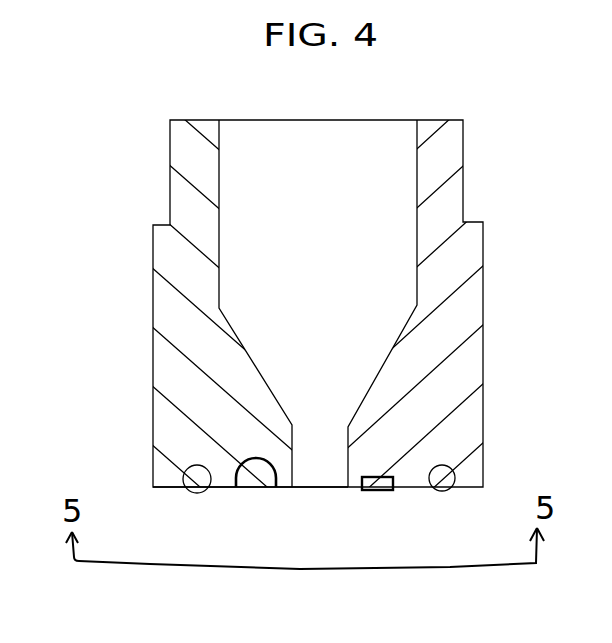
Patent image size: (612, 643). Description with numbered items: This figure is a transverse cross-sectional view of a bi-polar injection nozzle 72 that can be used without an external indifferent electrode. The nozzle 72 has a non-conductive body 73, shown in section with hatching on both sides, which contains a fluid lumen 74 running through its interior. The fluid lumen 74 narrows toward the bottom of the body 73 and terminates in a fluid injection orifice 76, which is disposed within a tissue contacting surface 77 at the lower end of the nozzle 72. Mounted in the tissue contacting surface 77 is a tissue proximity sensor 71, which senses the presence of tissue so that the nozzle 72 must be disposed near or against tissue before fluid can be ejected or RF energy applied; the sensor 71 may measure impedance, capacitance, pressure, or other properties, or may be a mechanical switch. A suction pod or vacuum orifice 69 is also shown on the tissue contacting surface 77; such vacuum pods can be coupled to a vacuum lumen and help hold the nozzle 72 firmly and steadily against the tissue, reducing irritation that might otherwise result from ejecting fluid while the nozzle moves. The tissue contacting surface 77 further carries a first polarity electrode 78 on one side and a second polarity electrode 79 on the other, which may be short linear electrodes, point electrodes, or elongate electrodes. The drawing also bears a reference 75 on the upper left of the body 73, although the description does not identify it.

The bi-polar injection nozzle 72 is at (472, 101).
The non-conductive body 73 is at (453, 196).
The fluid lumen 74 is at (345, 197).
The left side wall 75 is at (172, 151).
The suction pod or vacuum orifice 69 is at (243, 468).
The tissue proximity sensor 71 is at (392, 490).
The fluid injection orifice 76 is at (317, 478).
The tissue contacting surface 77 is at (236, 487).
The first polarity electrode 78 is at (193, 491).
The second polarity electrode 79 is at (443, 491).